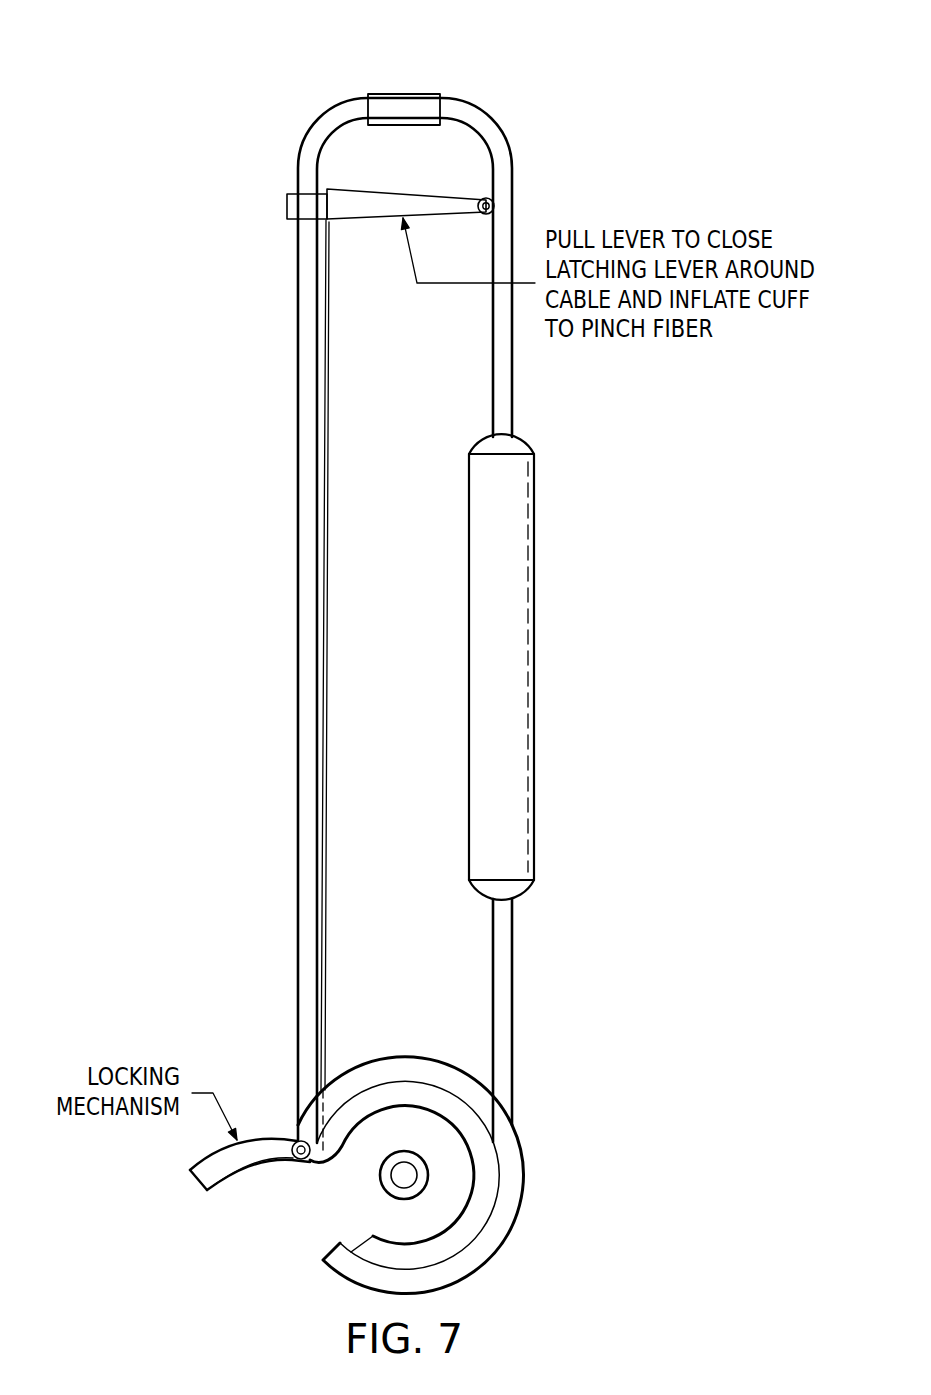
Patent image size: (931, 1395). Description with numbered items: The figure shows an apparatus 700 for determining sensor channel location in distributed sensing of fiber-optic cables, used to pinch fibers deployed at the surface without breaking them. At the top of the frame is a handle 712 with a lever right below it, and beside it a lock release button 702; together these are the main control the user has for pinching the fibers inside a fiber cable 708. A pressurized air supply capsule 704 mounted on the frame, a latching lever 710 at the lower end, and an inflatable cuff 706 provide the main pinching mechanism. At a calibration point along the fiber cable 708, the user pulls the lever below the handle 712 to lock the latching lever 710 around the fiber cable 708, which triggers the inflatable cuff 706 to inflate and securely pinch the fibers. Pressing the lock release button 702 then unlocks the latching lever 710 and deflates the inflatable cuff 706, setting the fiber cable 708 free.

The apparatus 700 is at (221, 70).
The lock release button 702 is at (295, 205).
The pressurized air supply capsule 704 is at (525, 667).
The inflatable cuff 706 is at (487, 1182).
The fiber cable 708 is at (380, 1175).
The latching lever 710 is at (415, 1068).
The handle 712 is at (407, 103).